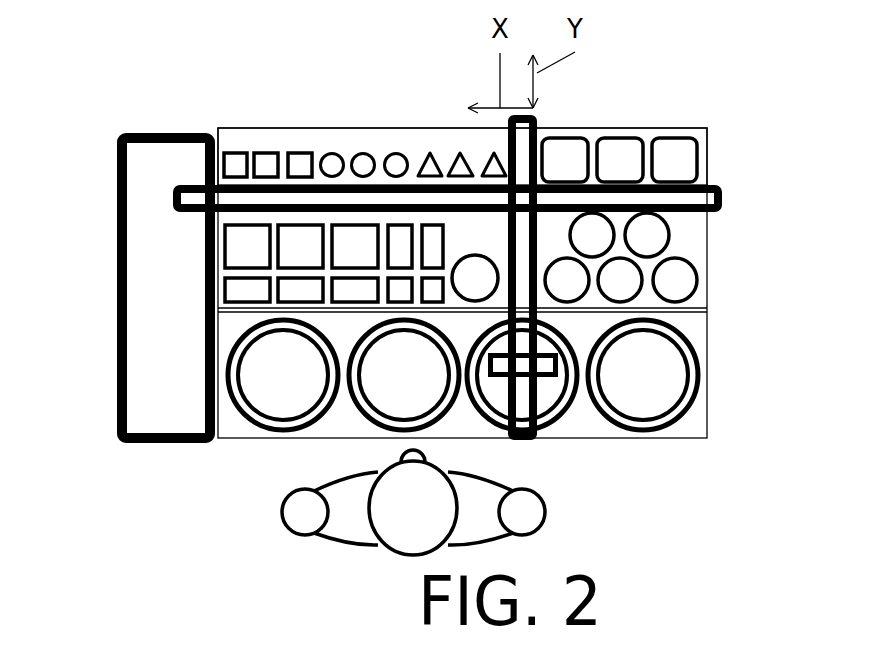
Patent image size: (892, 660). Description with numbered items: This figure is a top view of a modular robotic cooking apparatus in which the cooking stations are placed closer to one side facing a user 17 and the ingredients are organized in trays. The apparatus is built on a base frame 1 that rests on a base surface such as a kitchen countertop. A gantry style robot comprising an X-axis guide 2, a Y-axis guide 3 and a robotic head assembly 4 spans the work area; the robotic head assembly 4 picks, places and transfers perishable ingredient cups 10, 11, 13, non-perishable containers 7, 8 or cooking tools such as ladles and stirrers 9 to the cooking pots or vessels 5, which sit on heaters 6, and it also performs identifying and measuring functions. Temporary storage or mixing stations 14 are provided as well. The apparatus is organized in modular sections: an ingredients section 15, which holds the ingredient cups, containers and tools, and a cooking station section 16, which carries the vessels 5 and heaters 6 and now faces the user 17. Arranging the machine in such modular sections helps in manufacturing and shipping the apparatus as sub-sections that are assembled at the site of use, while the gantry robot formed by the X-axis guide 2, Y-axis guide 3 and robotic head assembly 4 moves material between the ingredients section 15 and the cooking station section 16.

The base frame 1 is at (170, 135).
The X-axis guide 2 is at (722, 202).
The Y-axis guide 3 is at (537, 115).
The robotic head assembly 4 is at (558, 375).
The cooking pots or vessels 5 is at (702, 375).
The heaters 6 is at (673, 343).
The non-perishable container 7 is at (235, 153).
The non-perishable container 8 is at (332, 153).
The cooking tools such as ladles, stirrers 9 is at (427, 153).
The perishable ingredient cups 10 is at (223, 247).
The perishable ingredient cups 11 is at (223, 290).
The perishable ingredient cups 13 is at (692, 262).
The temporary storage or mixing stations 14 is at (690, 138).
The ingredients section 15 is at (708, 150).
The cooking station section 16 is at (707, 427).
The user 17 is at (543, 525).